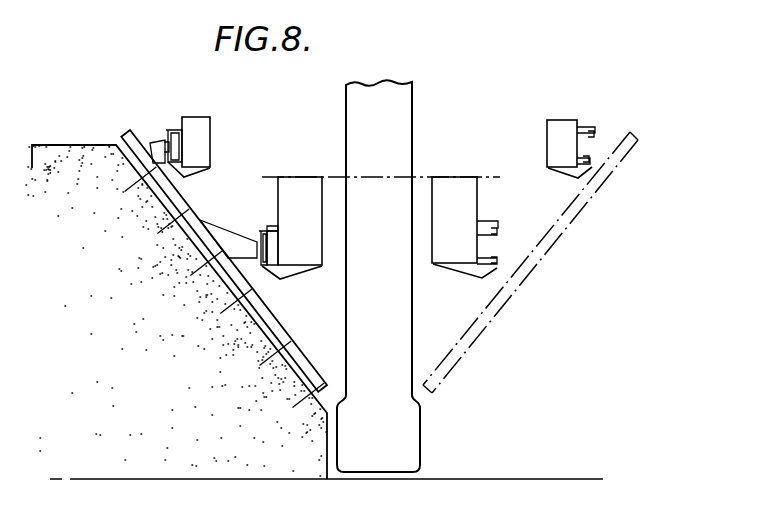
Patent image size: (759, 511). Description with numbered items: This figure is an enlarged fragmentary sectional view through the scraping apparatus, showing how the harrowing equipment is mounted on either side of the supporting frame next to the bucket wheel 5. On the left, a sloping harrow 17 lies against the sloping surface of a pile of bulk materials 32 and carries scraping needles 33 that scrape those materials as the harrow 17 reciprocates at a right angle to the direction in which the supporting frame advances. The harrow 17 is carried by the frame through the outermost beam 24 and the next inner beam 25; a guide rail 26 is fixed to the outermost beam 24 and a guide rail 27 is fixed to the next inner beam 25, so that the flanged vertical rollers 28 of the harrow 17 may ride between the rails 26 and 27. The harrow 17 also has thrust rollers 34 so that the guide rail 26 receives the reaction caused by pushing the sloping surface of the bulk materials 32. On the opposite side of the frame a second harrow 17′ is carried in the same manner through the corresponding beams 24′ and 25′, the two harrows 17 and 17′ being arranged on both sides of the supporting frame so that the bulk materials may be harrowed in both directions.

The bucket wheel 5 is at (407, 110).
The sloping harrow 17 is at (163, 190).
The harrow 17′ is at (567, 212).
The outermost beam 24 is at (205, 137).
The beam 24′ is at (578, 85).
The next inner beam 25 is at (295, 192).
The beam 25′ is at (450, 188).
The guide rail 26 is at (168, 132).
The guide rail 27 is at (180, 161).
The flanged vertical roller 28 is at (268, 240).
The bulk materials 32 is at (122, 358).
The scraping needles 33 is at (247, 335).
The thrust rollers 34 is at (242, 265).